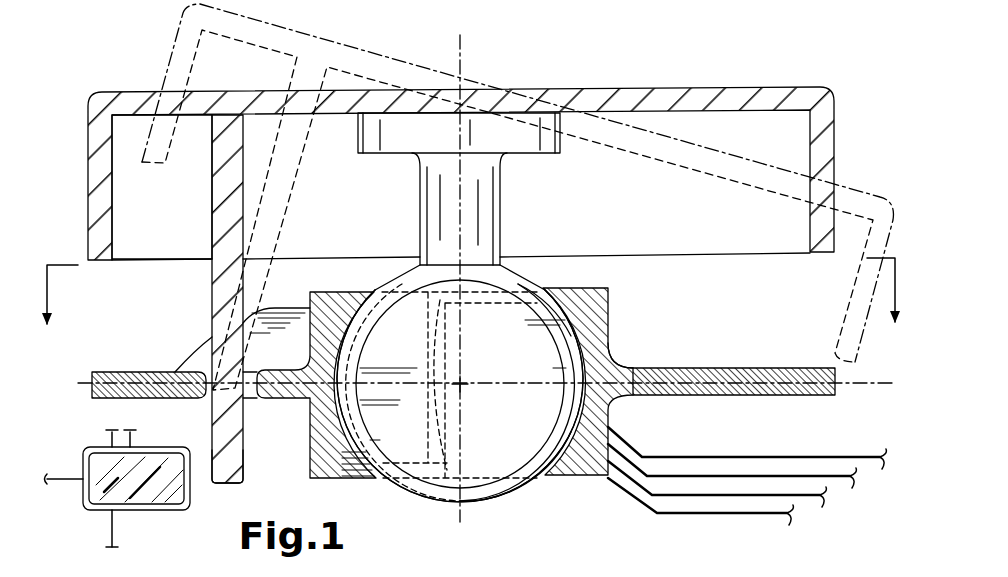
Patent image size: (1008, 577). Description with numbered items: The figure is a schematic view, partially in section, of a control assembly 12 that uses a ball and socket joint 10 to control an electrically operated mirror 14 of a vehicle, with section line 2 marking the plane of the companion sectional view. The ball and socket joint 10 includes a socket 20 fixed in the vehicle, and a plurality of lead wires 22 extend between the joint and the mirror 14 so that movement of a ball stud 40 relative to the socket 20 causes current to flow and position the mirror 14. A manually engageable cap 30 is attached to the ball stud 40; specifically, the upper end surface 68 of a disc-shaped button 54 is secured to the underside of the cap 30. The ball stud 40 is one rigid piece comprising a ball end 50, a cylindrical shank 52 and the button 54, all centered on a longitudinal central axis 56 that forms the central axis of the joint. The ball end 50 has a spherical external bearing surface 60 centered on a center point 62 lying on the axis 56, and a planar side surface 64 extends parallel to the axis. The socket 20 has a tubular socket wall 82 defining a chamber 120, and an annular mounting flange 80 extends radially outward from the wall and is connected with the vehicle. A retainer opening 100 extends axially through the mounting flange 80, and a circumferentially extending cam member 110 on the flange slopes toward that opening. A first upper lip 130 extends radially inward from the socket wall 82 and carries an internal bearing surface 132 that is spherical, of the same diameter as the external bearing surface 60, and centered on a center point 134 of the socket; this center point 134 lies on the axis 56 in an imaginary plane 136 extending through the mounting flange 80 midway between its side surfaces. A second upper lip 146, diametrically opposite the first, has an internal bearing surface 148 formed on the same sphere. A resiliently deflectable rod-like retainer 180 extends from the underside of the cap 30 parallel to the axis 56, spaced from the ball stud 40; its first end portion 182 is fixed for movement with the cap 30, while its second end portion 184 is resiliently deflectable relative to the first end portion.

The section line 2- 2 is at (473, 306).
The ball and socket joint 10 is at (650, 305).
The control assembly 12 is at (860, 172).
The mirror 14 is at (141, 513).
The socket 20 is at (606, 284).
The lead wires 22 is at (735, 470).
The cap 30 is at (712, 82).
The ball stud 40 is at (446, 189).
The ball end 50 is at (391, 272).
The shank 52 is at (433, 198).
The button 54 is at (358, 140).
The longitudinal central axis 56 is at (463, 54).
The external bearing surface 60 is at (413, 501).
The center point 62 is at (465, 390).
The first planar side surface 64 is at (481, 468).
The upper end surface 68 is at (423, 113).
The mounting flange 80 is at (721, 365).
The socket wall 82 is at (615, 343).
The retainer opening 100 is at (207, 399).
The cam member 110 is at (193, 347).
The chamber 120 is at (572, 466).
The first upper lip 130 is at (567, 288).
The internal bearing surface 132 is at (571, 319).
The center point 134 is at (463, 386).
The imaginary plane 136 is at (862, 387).
The second upper lip 146 is at (340, 292).
The internal bearing surface 148 is at (347, 333).
The retainer 180 is at (210, 283).
The first end portion 182 is at (212, 158).
The second end portion 184 is at (246, 452).